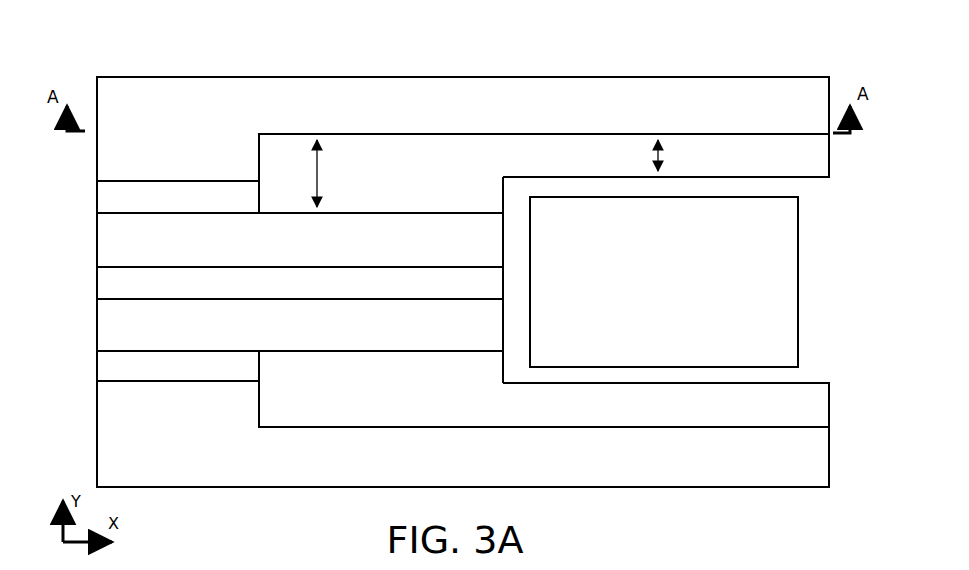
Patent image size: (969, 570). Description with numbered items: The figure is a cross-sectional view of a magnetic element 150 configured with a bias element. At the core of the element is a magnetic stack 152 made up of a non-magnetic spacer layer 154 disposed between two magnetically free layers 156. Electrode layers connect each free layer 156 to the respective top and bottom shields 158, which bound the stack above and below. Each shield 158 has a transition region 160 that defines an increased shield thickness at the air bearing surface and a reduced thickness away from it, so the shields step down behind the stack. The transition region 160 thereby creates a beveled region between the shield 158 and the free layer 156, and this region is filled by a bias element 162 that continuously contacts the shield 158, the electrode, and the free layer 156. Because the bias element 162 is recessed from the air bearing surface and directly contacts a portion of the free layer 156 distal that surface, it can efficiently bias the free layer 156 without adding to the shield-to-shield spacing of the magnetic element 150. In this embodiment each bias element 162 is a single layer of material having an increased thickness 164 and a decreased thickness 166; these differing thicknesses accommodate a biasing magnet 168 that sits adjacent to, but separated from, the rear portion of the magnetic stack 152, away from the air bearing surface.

The magnetic element 150 is at (150, 46).
The magnetic stack 152 is at (271, 282).
The non-magnetic spacer layer 154 is at (300, 283).
The magnetically free layer 156 is at (300, 282).
The shield 158 is at (463, 282).
The transition region 160 is at (254, 150).
The bias element 162 is at (666, 280).
The increased thickness 164 is at (340, 173).
The decreased thickness 166 is at (639, 155).
The biasing magnet 168 is at (664, 282).